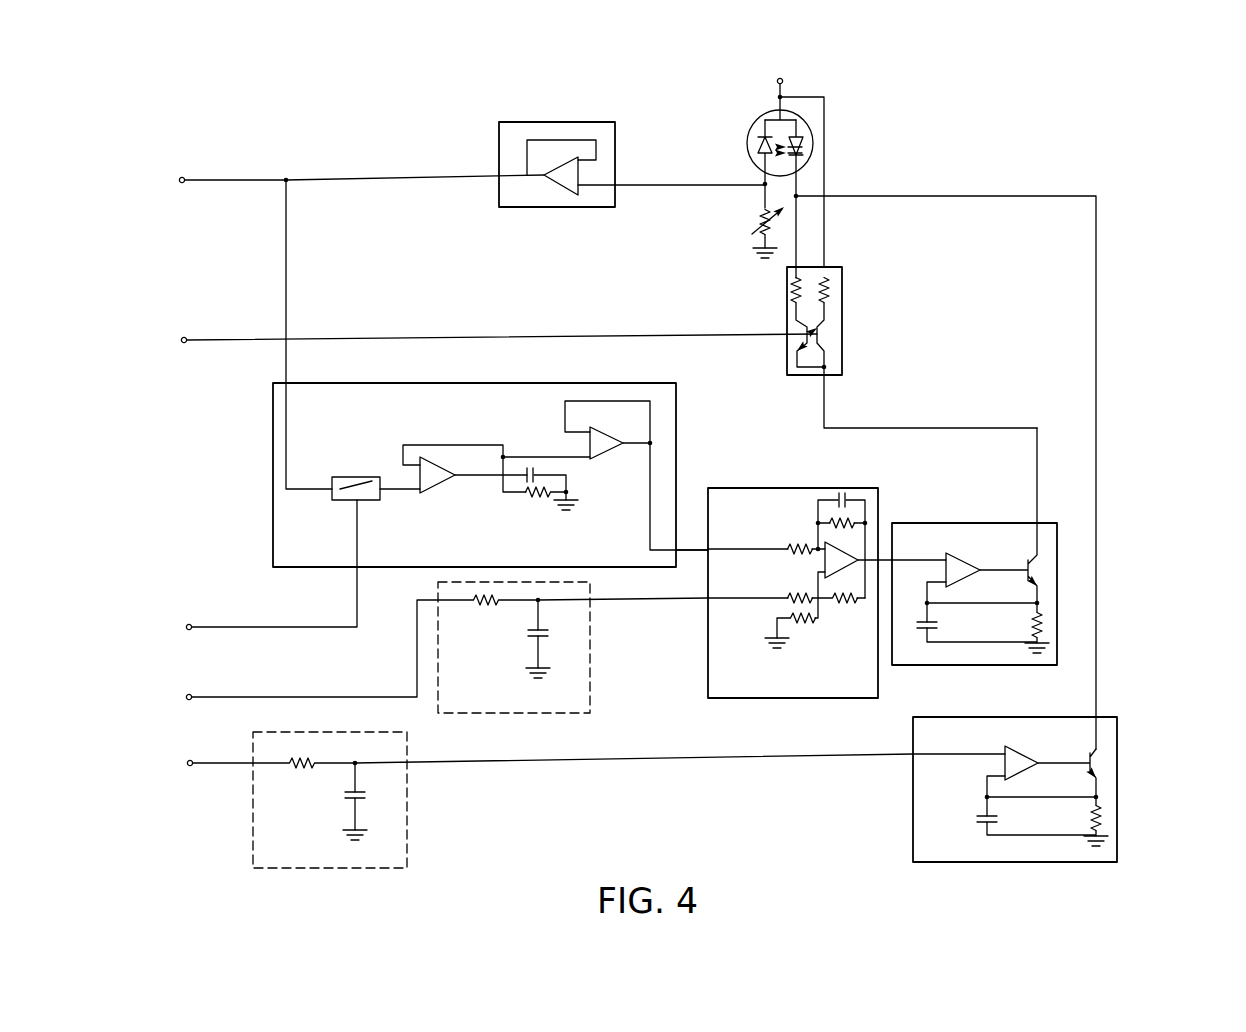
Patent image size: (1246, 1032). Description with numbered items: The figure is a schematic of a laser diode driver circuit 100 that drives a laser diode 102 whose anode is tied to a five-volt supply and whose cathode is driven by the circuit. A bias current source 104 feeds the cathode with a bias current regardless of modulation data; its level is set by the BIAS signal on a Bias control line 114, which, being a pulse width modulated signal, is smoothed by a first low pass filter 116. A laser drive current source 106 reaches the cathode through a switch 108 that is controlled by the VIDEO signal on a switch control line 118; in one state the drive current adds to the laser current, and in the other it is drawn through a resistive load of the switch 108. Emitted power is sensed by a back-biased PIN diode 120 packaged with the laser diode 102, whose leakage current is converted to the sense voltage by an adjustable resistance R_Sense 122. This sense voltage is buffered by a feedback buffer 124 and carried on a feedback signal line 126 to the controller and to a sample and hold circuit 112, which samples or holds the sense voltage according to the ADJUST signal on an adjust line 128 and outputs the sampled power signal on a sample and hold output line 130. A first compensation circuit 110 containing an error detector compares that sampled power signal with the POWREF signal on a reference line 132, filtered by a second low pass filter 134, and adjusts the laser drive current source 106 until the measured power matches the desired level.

The laser diode driver circuit 100 is at (1114, 151).
The laser diode 102 is at (875, 92).
The bias current source 104 is at (913, 815).
The laser drive current source 106 is at (968, 523).
The switch 108 is at (845, 322).
The first compensation circuit 110 is at (707, 652).
The sample and hold circuit 112 is at (458, 383).
The Bias control line 114 is at (673, 760).
The first low pass filter 116 is at (407, 805).
The switch control line 118 is at (565, 337).
The PIN diode 120 is at (734, 127).
The resistance R_Sense 122 is at (737, 223).
The feedback buffer 124 is at (462, 129).
The feedback signal line 126 is at (343, 178).
The adjust line 128 is at (238, 625).
The sample and hold output line 130 is at (700, 550).
The reference line 132 is at (310, 695).
The second low pass filter 134 is at (590, 645).